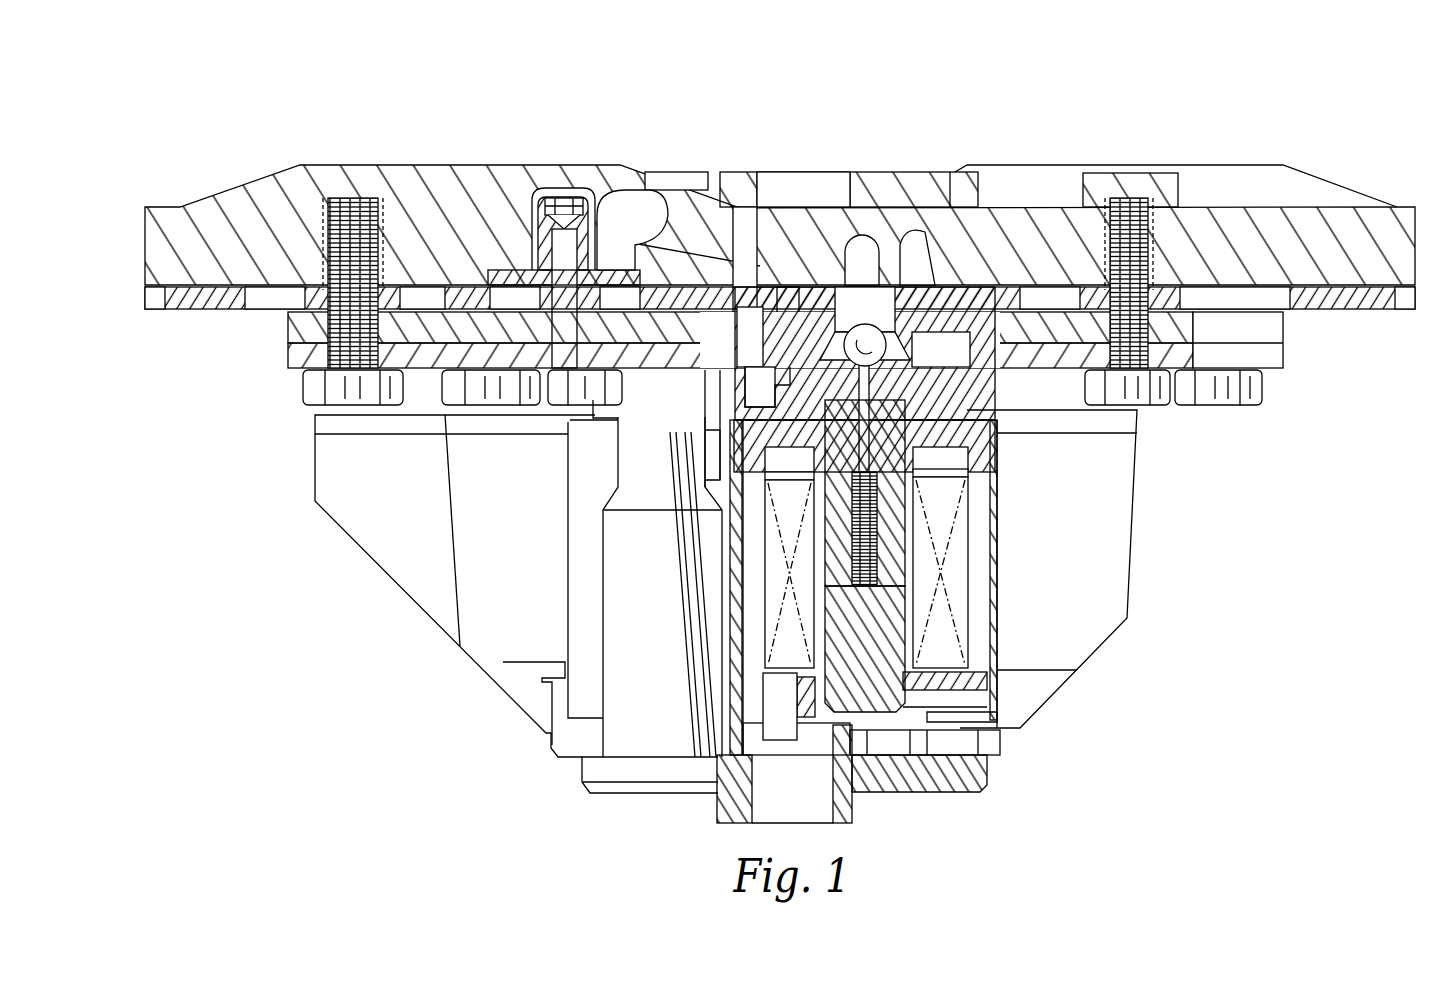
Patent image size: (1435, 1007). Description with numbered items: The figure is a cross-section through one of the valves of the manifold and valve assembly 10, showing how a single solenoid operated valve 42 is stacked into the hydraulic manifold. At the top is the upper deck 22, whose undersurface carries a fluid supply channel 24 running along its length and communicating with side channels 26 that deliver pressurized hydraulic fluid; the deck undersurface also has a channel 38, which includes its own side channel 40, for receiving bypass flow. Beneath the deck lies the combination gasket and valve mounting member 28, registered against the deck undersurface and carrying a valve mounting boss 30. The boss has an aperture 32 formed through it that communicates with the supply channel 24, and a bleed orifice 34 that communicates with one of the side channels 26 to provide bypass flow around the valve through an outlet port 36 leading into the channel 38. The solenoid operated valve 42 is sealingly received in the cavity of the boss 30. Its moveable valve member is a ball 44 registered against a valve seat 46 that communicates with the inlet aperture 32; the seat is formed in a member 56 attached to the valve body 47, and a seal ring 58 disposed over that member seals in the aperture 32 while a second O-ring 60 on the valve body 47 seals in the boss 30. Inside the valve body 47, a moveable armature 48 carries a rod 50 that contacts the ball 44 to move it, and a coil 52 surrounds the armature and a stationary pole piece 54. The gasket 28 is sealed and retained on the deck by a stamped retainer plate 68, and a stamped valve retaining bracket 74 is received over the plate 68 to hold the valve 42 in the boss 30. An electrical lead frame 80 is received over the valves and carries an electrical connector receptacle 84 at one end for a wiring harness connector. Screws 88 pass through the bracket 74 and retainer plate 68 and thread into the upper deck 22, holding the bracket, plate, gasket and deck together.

The valve assembly 10 is at (458, 125).
The upper deck 22 is at (228, 200).
The fluid supply channel 24 is at (867, 210).
The side channels 26 is at (913, 210).
The combination gasket and valve mounting member 28 is at (155, 305).
The valve mounting boss 30 is at (1022, 405).
The aperture 32 is at (823, 210).
The bleed orifice 34 is at (943, 172).
The outlet port 36 is at (740, 220).
The channel 38 is at (612, 218).
The side channel 40 is at (670, 218).
The solenoid operated valve 42 is at (1012, 597).
The ball 44 is at (882, 448).
The valve seat 46 is at (850, 358).
The valve body 47 is at (738, 444).
The armature 48 is at (888, 550).
The rod 50 is at (877, 547).
The coil 52 is at (968, 625).
The stationary pole piece 54 is at (860, 680).
The member 56 is at (916, 342).
The seal ring 58 is at (783, 210).
The second O-ring 60 is at (752, 378).
The retainer plate 68 is at (295, 326).
The valve retaining bracket 74 is at (1267, 357).
The electrical lead frame 80 is at (935, 792).
The electrical connector receptacle 84 is at (600, 633).
The screws 88 is at (1130, 272).